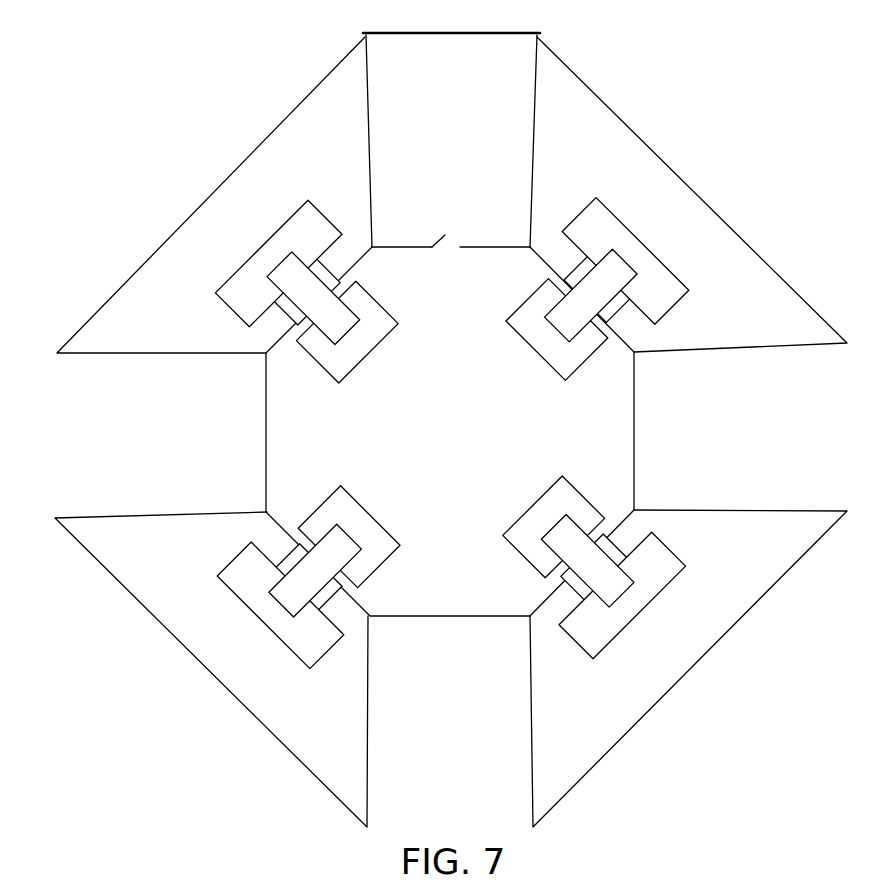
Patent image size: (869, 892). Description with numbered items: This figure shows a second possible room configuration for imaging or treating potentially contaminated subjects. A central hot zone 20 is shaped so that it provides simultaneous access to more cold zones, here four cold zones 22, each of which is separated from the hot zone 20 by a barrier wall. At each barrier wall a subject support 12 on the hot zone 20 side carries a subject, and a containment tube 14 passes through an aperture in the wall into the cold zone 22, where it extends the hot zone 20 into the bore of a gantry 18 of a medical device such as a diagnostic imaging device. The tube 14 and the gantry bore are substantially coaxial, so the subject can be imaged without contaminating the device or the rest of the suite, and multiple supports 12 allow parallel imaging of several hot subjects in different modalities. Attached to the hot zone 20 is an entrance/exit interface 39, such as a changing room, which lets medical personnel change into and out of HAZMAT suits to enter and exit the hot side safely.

The subject support 12 is at (517, 343).
The containment tube 14 is at (322, 260).
The gantry 18 is at (290, 220).
The hot zone 20 is at (433, 442).
The cold zone 22 is at (161, 319).
The entrance/exit interface 39 is at (444, 164).